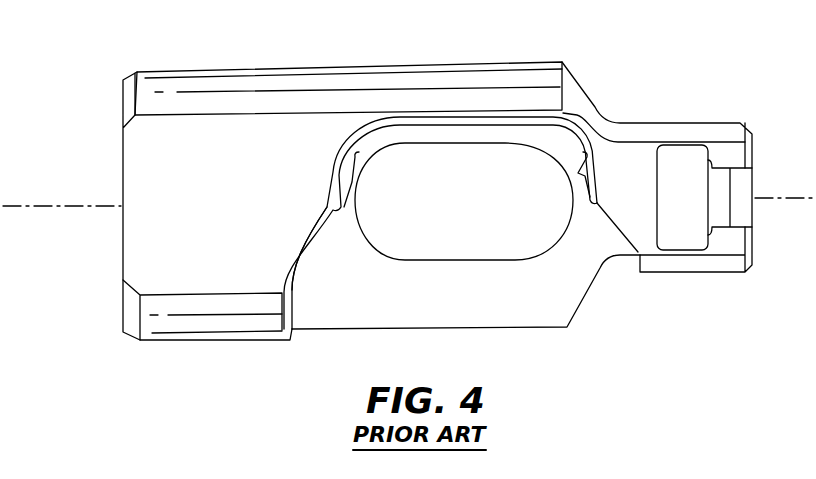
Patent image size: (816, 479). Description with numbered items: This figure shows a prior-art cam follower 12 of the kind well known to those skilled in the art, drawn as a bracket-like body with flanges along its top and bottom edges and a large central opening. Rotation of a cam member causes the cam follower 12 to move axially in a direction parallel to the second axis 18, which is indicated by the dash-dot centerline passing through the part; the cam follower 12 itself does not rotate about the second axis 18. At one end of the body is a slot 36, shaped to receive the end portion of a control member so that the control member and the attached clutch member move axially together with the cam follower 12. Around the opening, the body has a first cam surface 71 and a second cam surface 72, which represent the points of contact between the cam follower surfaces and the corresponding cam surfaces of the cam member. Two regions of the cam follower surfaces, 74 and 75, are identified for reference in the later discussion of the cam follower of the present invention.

The cam follower 12 is at (646, 74).
The second axis 18 is at (43, 207).
The slot 36 is at (682, 155).
The first cam surface 71 is at (333, 209).
The second cam surface 72 is at (593, 203).
The region of the cam follower surface 74 is at (354, 184).
The region of the cam follower surface 75 is at (579, 176).